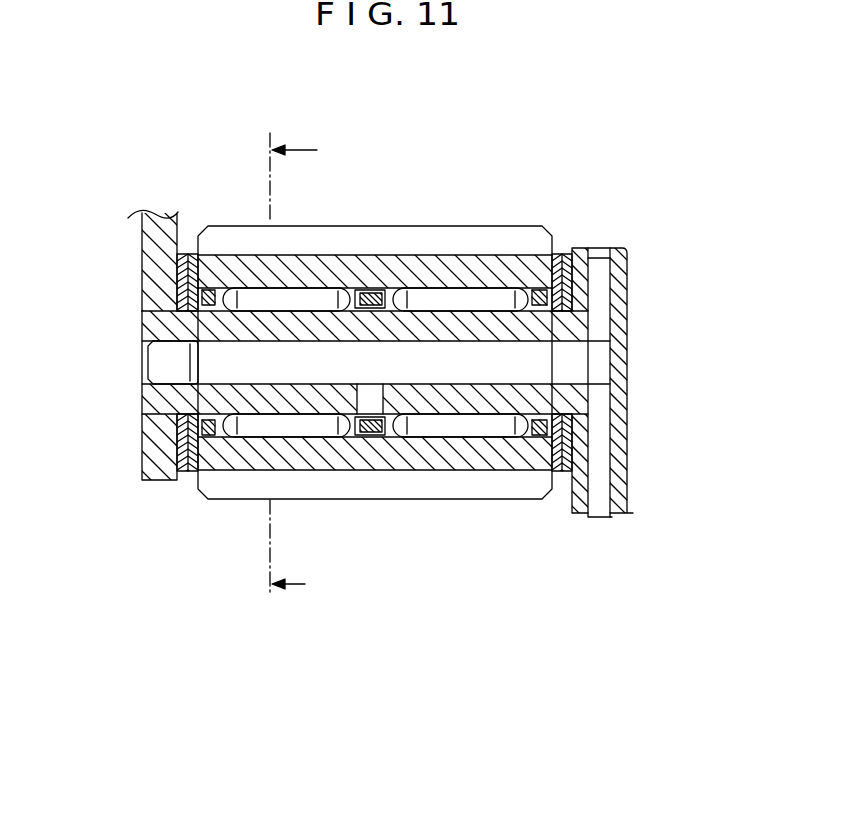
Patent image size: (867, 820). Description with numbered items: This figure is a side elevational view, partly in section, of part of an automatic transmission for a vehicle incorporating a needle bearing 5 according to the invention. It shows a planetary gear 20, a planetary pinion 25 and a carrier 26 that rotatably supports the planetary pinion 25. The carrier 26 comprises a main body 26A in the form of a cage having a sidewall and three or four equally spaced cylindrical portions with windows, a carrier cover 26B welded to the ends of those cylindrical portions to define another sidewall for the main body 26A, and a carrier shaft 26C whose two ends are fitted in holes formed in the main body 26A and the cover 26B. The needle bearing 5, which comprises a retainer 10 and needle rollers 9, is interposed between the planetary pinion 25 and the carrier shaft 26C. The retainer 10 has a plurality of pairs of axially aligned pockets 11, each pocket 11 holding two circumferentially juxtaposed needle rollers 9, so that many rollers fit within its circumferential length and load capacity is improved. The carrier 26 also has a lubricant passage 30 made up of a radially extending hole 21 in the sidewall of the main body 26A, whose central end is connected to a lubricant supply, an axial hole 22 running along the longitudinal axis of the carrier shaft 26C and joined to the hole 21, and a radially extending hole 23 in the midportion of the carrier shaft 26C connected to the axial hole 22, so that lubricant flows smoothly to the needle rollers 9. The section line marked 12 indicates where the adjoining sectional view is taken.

The needle bearing 5 is at (420, 557).
The needle rollers 9 is at (440, 432).
The retainer 10 is at (370, 433).
The pocket 11 is at (517, 455).
The section line for FIG. 12 is at (282, 366).
The planetary gear 20 is at (591, 229).
The radially extending hole 21 is at (602, 460).
The axial hole 22 is at (588, 365).
The radially extending hole 23 is at (368, 388).
The planetary pinion 25 is at (494, 487).
The carrier 26 is at (625, 250).
The main body 26A is at (627, 287).
The carrier cover 26B is at (150, 302).
The carrier shaft 26C is at (155, 402).
The lubricant passage 30 is at (602, 383).